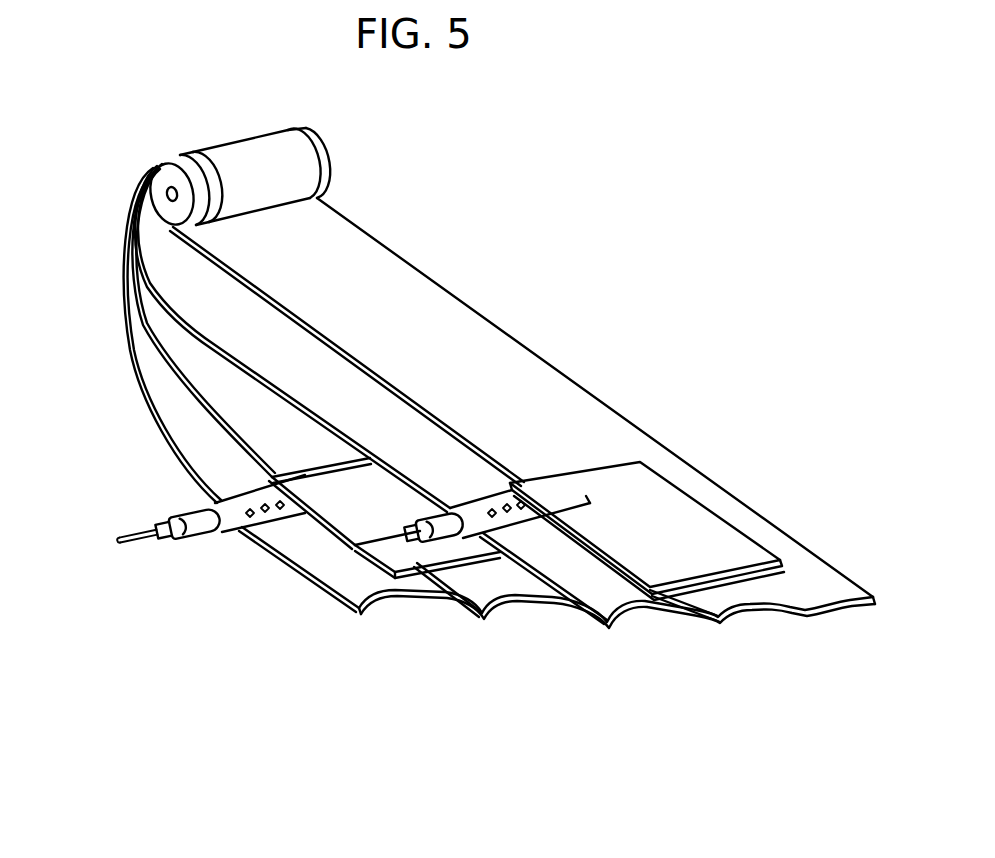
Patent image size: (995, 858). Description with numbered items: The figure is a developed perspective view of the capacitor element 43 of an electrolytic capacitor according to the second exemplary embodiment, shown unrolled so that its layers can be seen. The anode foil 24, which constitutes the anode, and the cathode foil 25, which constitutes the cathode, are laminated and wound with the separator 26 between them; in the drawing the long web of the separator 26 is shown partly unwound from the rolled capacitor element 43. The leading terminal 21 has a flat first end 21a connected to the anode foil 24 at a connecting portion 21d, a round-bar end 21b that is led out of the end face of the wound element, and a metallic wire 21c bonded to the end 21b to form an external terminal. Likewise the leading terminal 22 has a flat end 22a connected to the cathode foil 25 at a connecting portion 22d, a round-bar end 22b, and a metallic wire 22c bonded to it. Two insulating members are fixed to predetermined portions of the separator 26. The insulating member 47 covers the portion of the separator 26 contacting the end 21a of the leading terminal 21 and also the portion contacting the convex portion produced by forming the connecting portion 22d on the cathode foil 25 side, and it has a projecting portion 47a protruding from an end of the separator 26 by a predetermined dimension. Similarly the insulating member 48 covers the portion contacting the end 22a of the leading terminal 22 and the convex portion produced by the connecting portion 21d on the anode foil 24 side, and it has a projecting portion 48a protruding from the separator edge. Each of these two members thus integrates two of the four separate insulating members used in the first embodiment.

The capacitor element 43 is at (352, 163).
The separator 26 is at (507, 577).
The cathode foil 25 is at (373, 572).
The insulating member 48 is at (437, 552).
The projecting portion 48a is at (400, 556).
The anode foil 24 is at (608, 582).
The insulating member 47 is at (693, 528).
The projecting portion 47a is at (647, 570).
The leading terminal 21 is at (435, 354).
The end 21a is at (508, 485).
The end 21b is at (450, 508).
The metallic wire 21c is at (403, 528).
The connecting portion 21d is at (551, 482).
The leading terminal 22 is at (179, 564).
The end 22a is at (233, 513).
The end 22b is at (198, 522).
The metallic wire 22c is at (120, 543).
The connecting portion 22d is at (278, 577).